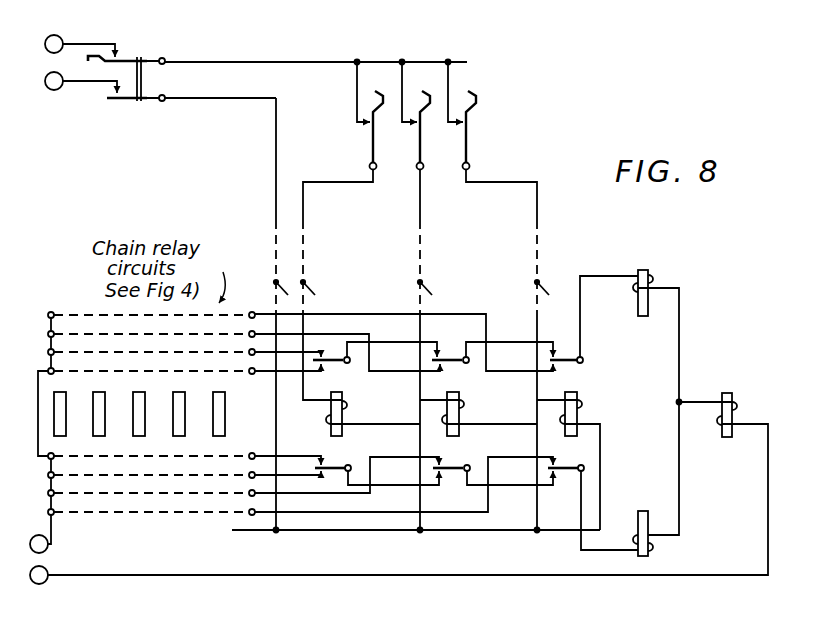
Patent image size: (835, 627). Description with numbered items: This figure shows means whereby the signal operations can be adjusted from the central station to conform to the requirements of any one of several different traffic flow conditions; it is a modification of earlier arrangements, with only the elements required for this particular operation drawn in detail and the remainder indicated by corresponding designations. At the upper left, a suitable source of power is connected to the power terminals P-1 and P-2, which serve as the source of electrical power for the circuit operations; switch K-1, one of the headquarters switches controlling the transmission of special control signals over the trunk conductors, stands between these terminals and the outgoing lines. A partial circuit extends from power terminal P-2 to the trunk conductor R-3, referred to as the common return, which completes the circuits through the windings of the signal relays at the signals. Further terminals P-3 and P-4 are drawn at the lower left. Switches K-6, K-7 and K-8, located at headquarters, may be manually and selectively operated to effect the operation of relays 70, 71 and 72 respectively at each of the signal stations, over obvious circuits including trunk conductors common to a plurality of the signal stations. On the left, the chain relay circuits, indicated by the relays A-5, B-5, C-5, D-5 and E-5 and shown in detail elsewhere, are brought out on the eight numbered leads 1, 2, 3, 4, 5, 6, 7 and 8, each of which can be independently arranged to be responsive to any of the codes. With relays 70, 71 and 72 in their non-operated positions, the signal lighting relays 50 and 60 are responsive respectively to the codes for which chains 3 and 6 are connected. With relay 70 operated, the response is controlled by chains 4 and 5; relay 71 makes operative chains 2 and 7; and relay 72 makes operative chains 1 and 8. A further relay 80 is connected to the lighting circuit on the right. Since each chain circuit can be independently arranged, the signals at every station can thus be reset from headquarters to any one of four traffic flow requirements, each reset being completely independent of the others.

The power terminal P-1 is at (80, 38).
The power terminal P-2 is at (81, 90).
The plug terminal P-3 is at (56, 543).
The plug terminal P-4 is at (51, 583).
The switch K-1 is at (126, 70).
The switch K-6 is at (379, 116).
The switch K-7 is at (425, 116).
The switch K-8 is at (471, 116).
The trunk conductor R-3 is at (270, 200).
The chain 1 is at (300, 335).
The chain 2 is at (244, 345).
The chain 3 is at (184, 347).
The chain 4 is at (184, 365).
The chain 5 is at (184, 453).
The chain 6 is at (184, 469).
The chain 7 is at (243, 476).
The chain 8 is at (300, 486).
The chain relay A-5 is at (80, 418).
The chain relay B-5 is at (120, 418).
The chain relay C-5 is at (160, 418).
The chain relay D-5 is at (200, 418).
The chain relay E-5 is at (240, 418).
The relay 70 is at (376, 413).
The relay 71 is at (486, 413).
The relay 72 is at (587, 413).
The signal lighting relay 50 is at (658, 398).
The signal lighting relay 60 is at (647, 520).
The relay 80 is at (408, 484).